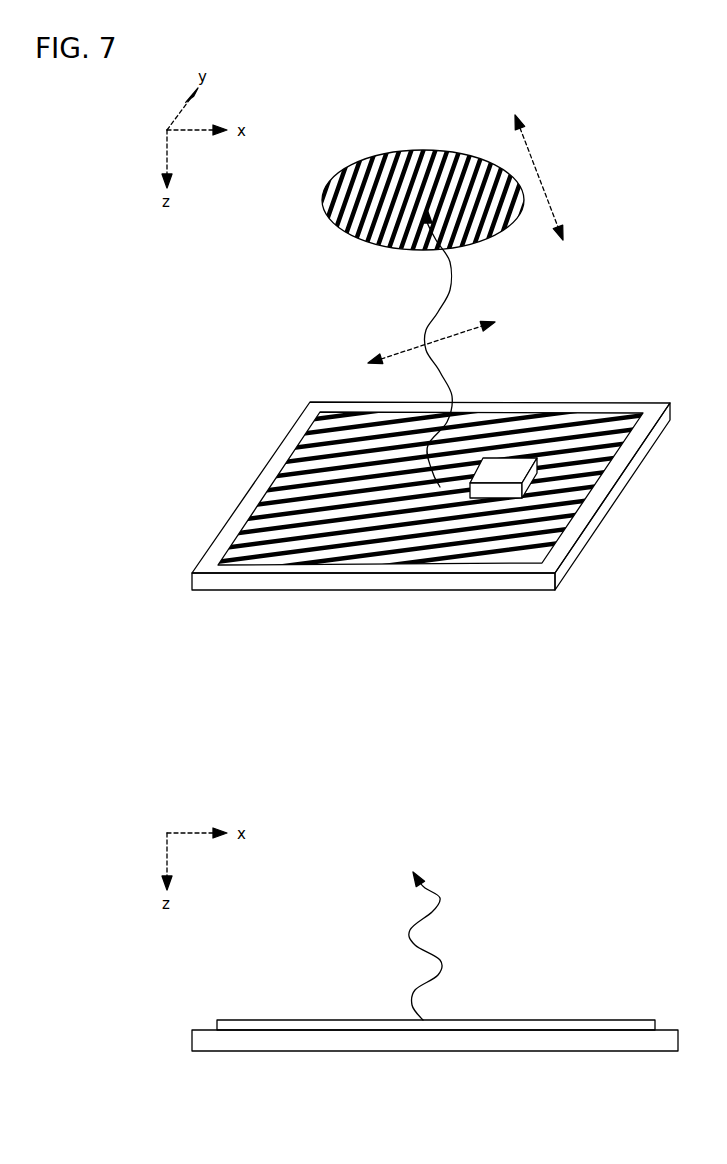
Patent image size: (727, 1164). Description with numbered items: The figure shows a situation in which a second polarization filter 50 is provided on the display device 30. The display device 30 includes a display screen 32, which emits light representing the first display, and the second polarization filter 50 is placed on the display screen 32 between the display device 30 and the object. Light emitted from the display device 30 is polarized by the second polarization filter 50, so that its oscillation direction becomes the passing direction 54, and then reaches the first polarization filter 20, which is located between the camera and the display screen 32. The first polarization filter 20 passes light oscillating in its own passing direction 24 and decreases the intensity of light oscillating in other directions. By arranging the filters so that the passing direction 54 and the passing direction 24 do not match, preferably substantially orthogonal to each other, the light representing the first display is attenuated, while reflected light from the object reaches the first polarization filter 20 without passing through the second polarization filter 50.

The first polarization filter 20 is at (322, 207).
The passing direction 24 is at (540, 178).
The display device 30 is at (505, 592).
The display screen 32 is at (440, 562).
The second polarization filter 50 is at (603, 412).
The passing direction 54 is at (412, 350).